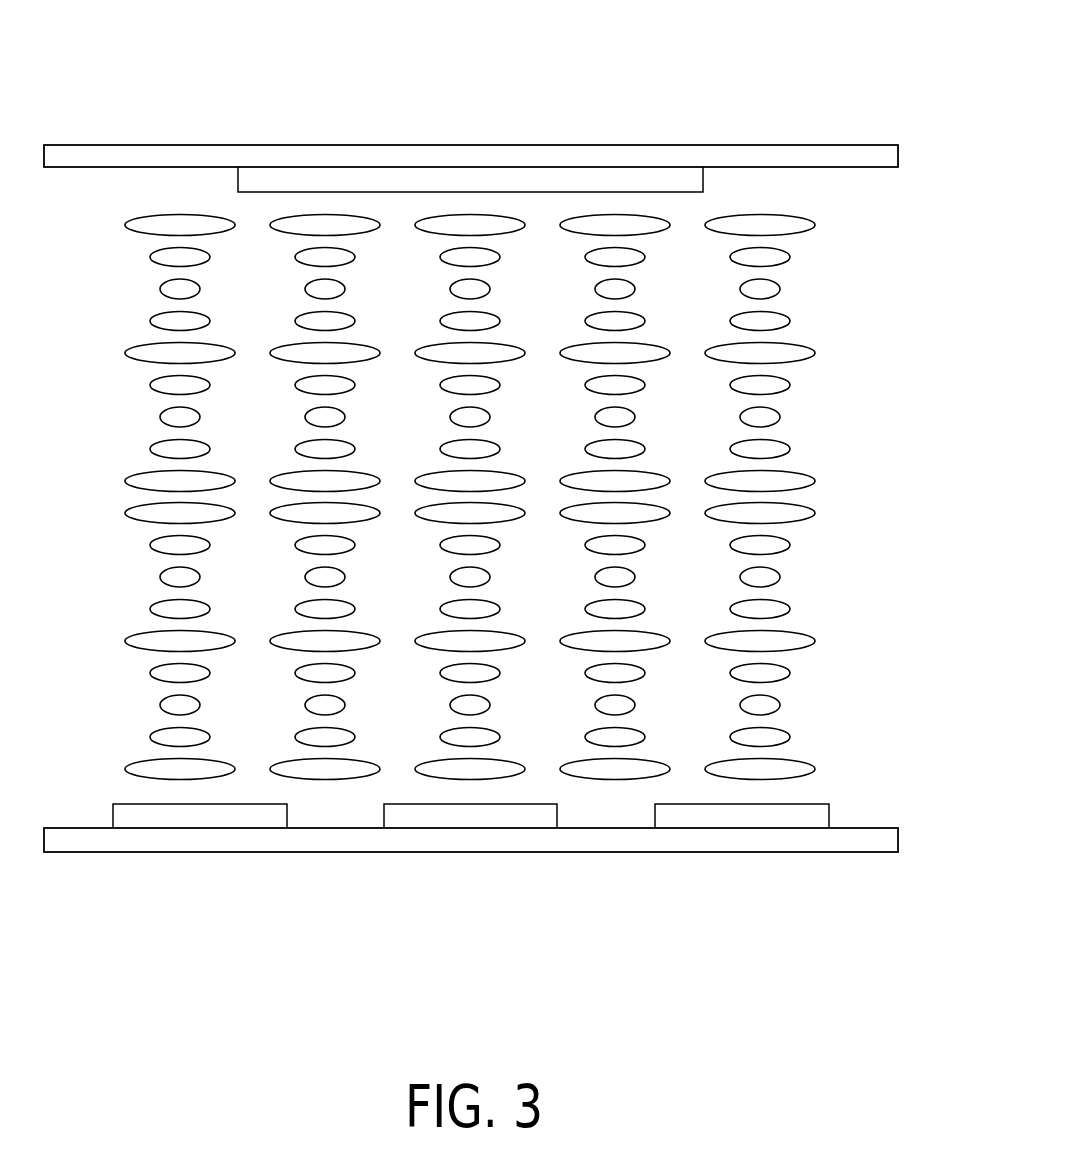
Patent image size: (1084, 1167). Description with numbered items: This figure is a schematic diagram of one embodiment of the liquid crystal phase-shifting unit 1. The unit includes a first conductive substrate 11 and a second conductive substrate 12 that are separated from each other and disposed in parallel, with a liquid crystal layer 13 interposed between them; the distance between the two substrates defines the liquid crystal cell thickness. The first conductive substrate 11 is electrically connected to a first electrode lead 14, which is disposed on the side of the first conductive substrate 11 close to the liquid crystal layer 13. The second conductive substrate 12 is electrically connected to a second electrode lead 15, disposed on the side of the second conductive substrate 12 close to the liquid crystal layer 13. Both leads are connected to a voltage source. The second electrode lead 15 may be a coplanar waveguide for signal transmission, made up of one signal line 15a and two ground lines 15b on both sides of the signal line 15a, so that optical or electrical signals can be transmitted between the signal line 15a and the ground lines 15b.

The liquid crystal phase-shifting unit 1 is at (442, 95).
The first conductive substrate 11 is at (635, 154).
The second conductive substrate 12 is at (755, 843).
The liquid crystal layer 13 is at (847, 228).
The first electrode lead 14 is at (252, 182).
The second electrode lead 15 is at (471, 905).
The signal line 15a is at (470, 863).
The ground lines 15b is at (275, 815).